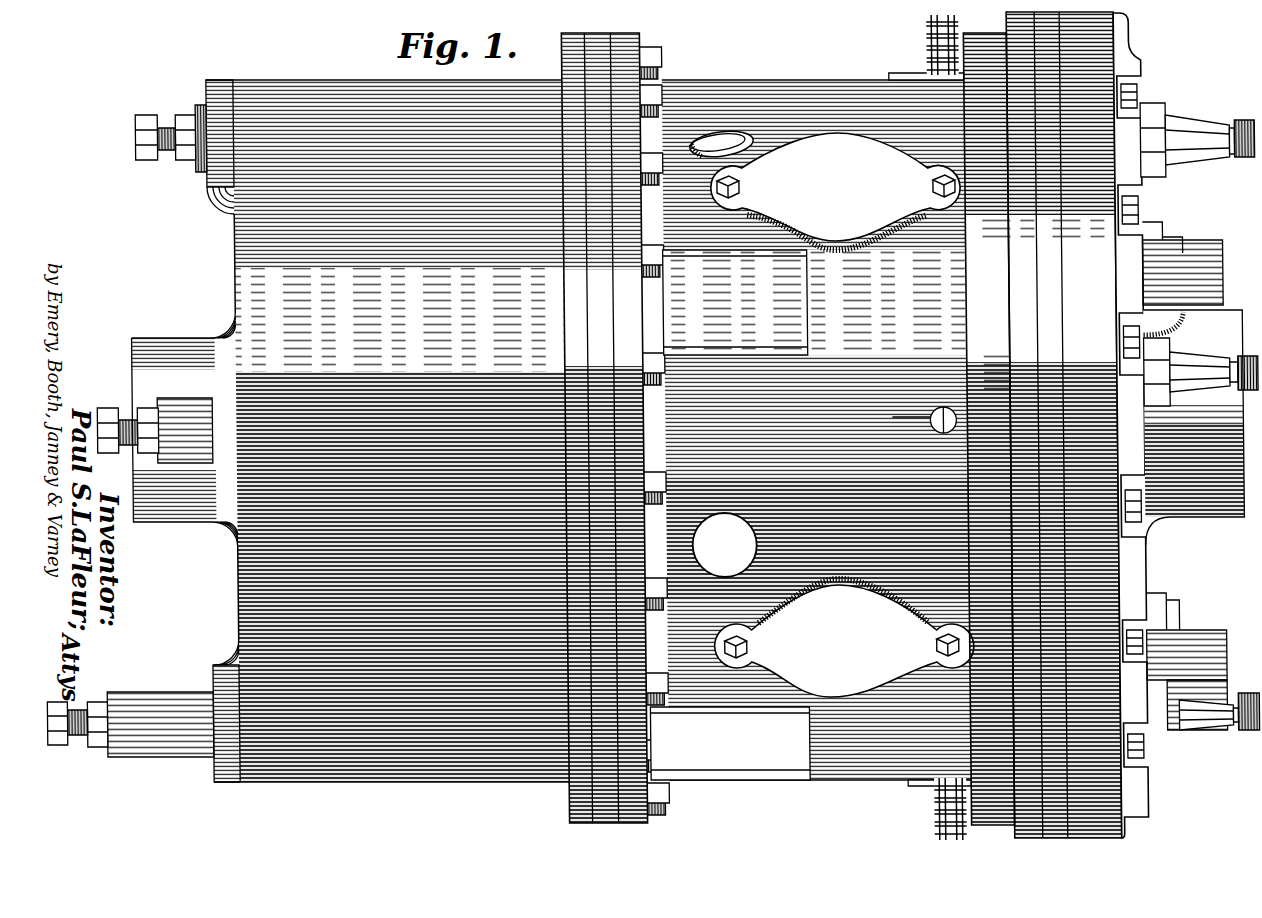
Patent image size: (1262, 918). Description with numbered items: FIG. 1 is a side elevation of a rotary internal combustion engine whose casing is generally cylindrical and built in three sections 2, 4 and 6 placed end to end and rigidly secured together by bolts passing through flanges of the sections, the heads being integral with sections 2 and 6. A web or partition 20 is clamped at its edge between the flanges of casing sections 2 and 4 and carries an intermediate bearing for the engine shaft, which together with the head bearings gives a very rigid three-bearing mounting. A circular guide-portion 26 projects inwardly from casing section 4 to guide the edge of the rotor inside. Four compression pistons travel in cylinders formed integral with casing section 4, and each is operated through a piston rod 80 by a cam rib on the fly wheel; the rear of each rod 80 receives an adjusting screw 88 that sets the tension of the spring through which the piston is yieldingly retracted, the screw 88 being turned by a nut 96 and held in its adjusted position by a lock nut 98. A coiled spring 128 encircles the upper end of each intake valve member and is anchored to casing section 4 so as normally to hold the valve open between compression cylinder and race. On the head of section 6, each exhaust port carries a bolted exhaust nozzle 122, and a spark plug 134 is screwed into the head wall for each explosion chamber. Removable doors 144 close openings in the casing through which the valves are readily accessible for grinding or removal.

The casing section 2 is at (327, 92).
The casing section 4 is at (727, 88).
The casing section 6 is at (1142, 798).
The web or partition 20 is at (594, 305).
The circular guide-portion 26 is at (979, 42).
The piston rod 80 is at (198, 174).
The adjusting screw 88 is at (167, 152).
The nut 96 is at (134, 136).
The lock nut 98 is at (186, 117).
The exhaust nozzle 122 is at (1197, 248).
The coiled spring 128 is at (926, 62).
The spark plug 134 is at (1197, 130).
The removable door 144 is at (834, 230).